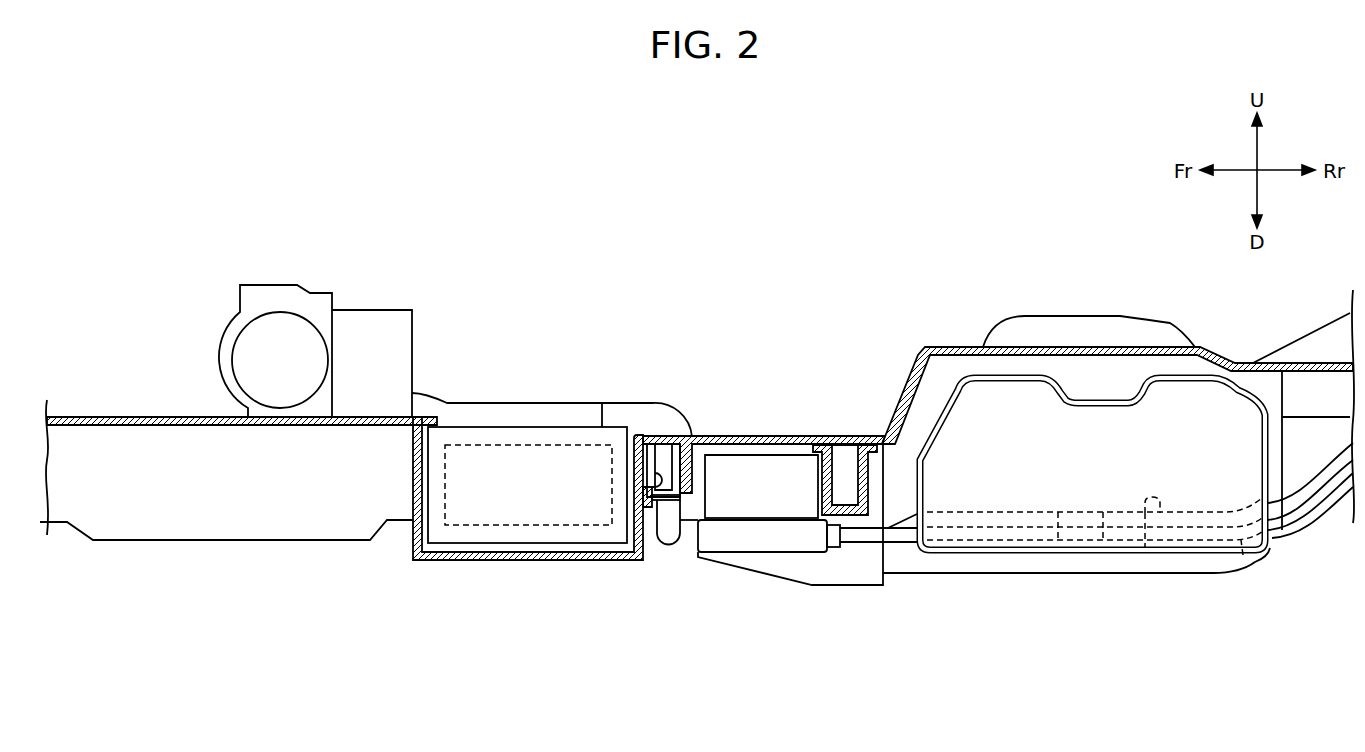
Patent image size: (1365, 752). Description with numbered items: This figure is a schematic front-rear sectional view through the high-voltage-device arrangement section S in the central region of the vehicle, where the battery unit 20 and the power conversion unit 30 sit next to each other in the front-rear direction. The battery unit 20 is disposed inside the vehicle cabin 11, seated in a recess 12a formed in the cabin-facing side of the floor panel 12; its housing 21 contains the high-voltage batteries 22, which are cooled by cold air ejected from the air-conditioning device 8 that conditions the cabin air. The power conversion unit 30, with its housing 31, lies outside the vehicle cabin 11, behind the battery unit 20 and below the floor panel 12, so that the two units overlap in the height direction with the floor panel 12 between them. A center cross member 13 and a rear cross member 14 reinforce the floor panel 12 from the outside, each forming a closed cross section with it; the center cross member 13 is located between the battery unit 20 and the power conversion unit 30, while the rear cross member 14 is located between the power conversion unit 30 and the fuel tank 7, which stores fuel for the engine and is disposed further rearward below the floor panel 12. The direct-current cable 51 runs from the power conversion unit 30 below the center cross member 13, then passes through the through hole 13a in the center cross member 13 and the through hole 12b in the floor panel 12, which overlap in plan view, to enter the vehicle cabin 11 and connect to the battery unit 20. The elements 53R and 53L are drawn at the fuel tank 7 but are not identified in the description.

The fuel tank 7 is at (1087, 553).
The air-conditioning device 8 is at (286, 285).
The vehicle cabin 11 is at (776, 267).
The floor panel 12 is at (847, 436).
The recess 12a is at (633, 523).
The through hole 12b is at (663, 436).
The center cross member 13 is at (694, 468).
The through hole 13a is at (655, 473).
The rear cross member 14 is at (820, 470).
The battery unit 20 is at (537, 398).
The housing 21 is at (578, 425).
The high-voltage batteries 22 is at (497, 445).
The power conversion unit 30 is at (771, 455).
The housing 31 is at (742, 455).
The direct-current cable 51 is at (666, 542).
The right pipe 53R is at (1148, 553).
The left pipe 53L is at (1243, 555).
The high-voltage-device arrangement section S is at (492, 590).